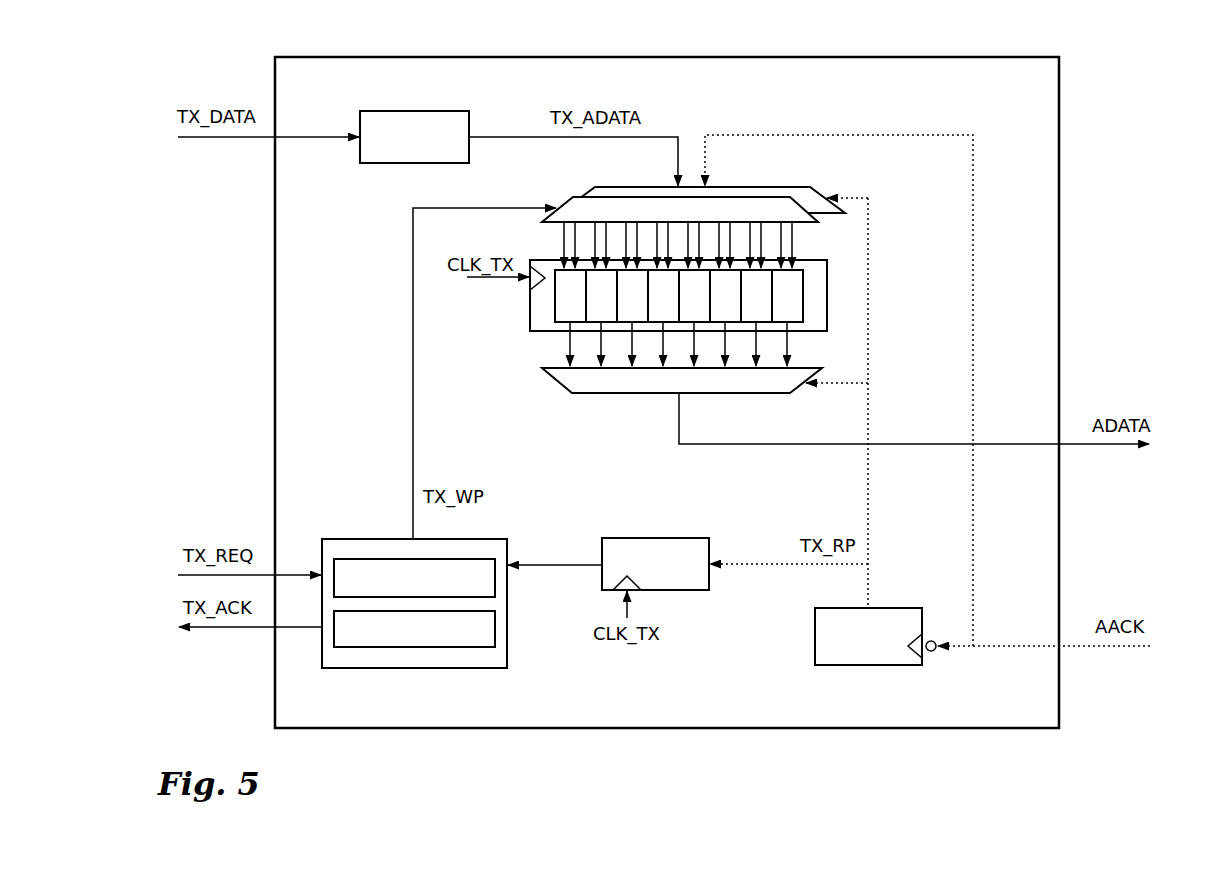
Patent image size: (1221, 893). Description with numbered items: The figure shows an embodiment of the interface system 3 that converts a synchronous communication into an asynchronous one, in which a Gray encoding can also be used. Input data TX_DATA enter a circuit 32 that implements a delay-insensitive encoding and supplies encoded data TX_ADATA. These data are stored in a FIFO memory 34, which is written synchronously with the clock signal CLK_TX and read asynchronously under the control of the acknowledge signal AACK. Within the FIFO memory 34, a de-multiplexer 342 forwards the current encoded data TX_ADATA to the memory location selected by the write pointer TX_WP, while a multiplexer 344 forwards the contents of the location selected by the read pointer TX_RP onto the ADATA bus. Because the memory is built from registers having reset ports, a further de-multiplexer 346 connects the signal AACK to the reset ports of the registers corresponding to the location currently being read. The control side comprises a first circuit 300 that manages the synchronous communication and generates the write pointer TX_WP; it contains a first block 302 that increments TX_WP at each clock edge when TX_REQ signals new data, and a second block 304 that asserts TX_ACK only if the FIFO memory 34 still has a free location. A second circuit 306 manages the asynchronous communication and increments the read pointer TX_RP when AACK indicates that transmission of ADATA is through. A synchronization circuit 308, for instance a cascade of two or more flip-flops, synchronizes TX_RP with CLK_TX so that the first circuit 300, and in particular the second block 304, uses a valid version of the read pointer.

The interface system 3 is at (848, 56).
The circuit for implementing a delay-insensitive encoding 32 is at (437, 123).
The de-multiplexer 342 is at (566, 197).
The further de-multiplexer 346 is at (822, 182).
The FIFO memory 34 is at (828, 298).
The multiplexer 344 is at (590, 395).
The first circuit 300 is at (437, 597).
The first block 302 is at (377, 565).
The second block 304 is at (407, 638).
The second circuit 306 is at (843, 660).
The synchronization circuit 308 is at (692, 545).